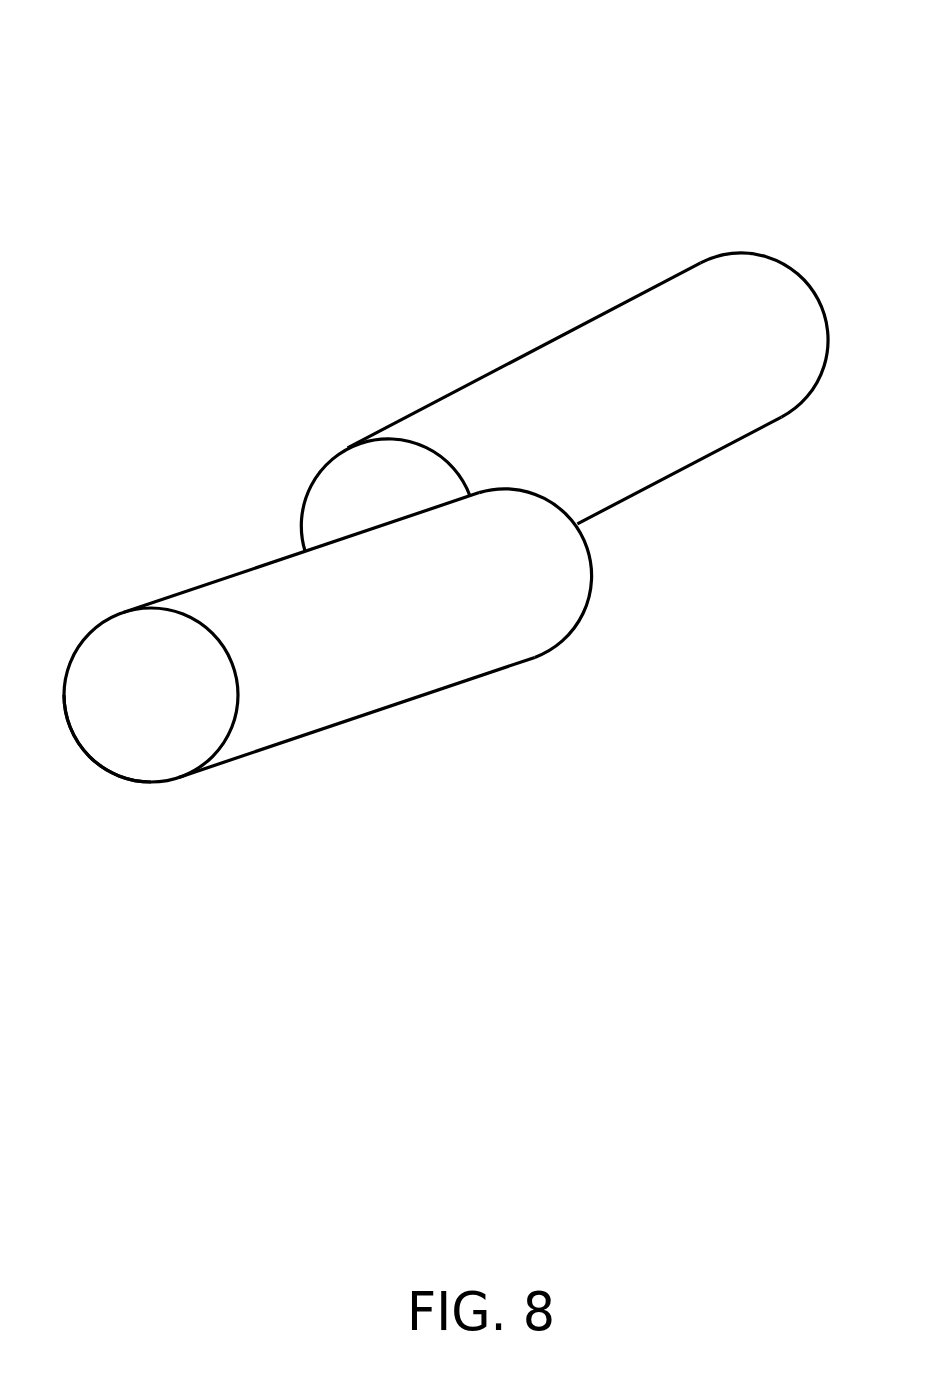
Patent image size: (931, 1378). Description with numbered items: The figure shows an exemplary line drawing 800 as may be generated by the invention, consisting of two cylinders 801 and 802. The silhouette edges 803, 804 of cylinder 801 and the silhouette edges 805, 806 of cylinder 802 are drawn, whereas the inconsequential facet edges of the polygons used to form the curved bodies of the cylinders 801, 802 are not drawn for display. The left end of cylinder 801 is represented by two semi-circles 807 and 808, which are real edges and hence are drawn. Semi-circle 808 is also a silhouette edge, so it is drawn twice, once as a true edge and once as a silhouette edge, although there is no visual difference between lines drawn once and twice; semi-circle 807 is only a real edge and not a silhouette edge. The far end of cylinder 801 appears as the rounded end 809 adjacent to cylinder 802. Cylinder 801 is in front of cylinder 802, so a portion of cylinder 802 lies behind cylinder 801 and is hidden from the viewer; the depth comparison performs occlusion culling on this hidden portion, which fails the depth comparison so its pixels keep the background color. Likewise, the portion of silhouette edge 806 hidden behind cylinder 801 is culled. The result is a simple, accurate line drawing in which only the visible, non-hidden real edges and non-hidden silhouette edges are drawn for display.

The cylindrical electrode assembly 800 is at (434, 408).
The cylinder 801 is at (358, 653).
The cylinder 802 is at (564, 402).
The silhouette edge 803 is at (233, 572).
The silhouette edge 804 is at (327, 729).
The silhouette edge 805 is at (588, 320).
The silhouette edge 806 is at (683, 468).
The semi-circle 807 is at (240, 702).
The semi-circle 808 is at (118, 777).
The far end of first cylinder 809 is at (593, 576).